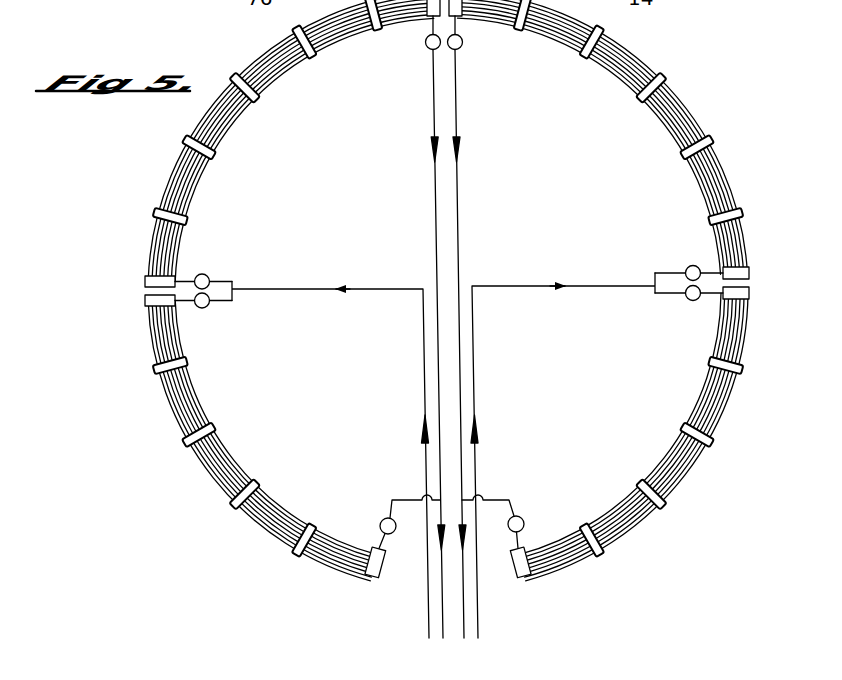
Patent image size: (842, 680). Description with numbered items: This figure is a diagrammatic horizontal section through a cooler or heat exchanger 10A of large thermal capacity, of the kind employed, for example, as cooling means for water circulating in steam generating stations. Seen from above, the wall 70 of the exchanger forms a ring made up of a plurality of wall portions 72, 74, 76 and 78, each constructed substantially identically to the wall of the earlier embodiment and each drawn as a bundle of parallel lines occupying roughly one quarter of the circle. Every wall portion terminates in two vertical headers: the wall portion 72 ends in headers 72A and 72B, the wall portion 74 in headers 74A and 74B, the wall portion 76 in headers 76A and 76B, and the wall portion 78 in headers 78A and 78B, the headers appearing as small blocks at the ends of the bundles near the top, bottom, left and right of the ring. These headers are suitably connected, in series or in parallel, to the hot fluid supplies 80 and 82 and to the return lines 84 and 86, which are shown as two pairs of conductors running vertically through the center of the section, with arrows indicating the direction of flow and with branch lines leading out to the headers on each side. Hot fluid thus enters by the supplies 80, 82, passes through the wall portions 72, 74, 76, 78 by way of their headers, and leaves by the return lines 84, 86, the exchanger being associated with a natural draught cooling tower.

The heat exchanger 10A is at (431, 290).
The wall 70 is at (413, 290).
The wall portion 72 is at (599, 63).
The wall portion 74 is at (681, 388).
The wall portion 76 is at (249, 449).
The wall portion 78 is at (249, 117).
The vertical header 72A is at (726, 268).
The vertical header 72B is at (465, 22).
The vertical header 74A is at (727, 297).
The vertical header 74B is at (524, 552).
The vertical header 76A is at (174, 302).
The vertical header 76B is at (378, 552).
The vertical header 78A is at (183, 274).
The vertical header 78B is at (425, 24).
The hot fluid supply 80 is at (425, 598).
The hot fluid supply 82 is at (478, 594).
The return line 84 is at (441, 623).
The return line 86 is at (464, 623).